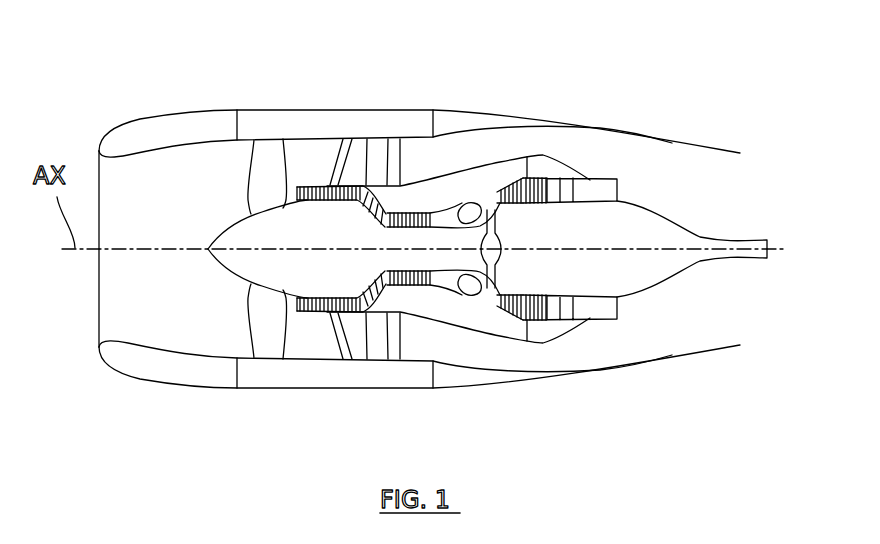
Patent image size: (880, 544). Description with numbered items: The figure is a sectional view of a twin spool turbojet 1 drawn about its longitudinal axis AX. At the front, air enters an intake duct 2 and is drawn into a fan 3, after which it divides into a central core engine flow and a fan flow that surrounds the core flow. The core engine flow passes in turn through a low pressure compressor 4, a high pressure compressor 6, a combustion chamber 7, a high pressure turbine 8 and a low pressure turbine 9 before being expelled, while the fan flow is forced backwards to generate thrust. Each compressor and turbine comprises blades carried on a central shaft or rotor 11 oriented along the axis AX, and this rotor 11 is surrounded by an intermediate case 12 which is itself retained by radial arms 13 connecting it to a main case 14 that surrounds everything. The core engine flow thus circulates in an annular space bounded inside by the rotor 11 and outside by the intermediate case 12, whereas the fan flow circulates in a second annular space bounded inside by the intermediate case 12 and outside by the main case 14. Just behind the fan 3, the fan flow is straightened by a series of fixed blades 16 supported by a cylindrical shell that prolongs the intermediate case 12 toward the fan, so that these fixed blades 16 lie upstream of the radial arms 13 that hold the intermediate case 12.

The twin spool turbojet 1 is at (231, 72).
The intake duct 2 is at (146, 249).
The fan 3 is at (265, 318).
The low pressure compressor 4 is at (312, 178).
The high pressure compressor 6 is at (408, 204).
The combustion chamber 7 is at (467, 195).
The high pressure turbine 8 is at (490, 189).
The low pressure turbine 9 is at (535, 170).
The rotor 11 is at (487, 249).
The intermediate case 12 is at (388, 304).
The radial arms 13 is at (380, 348).
The main case 14 is at (305, 374).
The fixed blades 16 is at (342, 346).